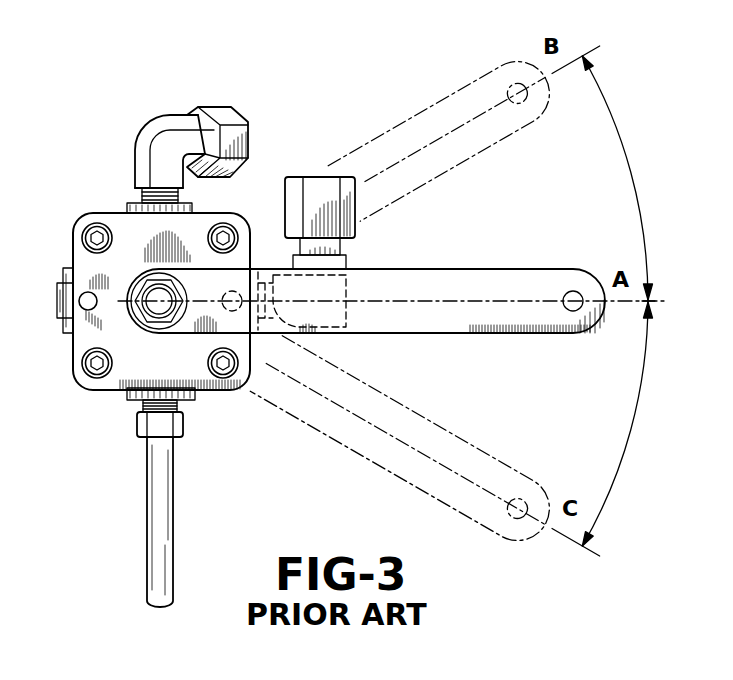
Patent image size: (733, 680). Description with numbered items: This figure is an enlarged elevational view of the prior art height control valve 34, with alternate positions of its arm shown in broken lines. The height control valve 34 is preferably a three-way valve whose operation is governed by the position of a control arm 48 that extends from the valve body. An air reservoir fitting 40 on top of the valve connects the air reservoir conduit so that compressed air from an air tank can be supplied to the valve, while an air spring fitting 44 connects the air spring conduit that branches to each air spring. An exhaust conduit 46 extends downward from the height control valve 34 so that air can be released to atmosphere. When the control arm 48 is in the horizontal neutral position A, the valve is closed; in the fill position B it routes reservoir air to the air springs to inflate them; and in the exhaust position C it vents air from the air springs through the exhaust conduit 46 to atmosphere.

The height control valve 34 is at (62, 364).
The air reservoir fitting 40 is at (150, 128).
The air spring fitting 44 is at (320, 192).
The exhaust conduit 46 is at (150, 515).
The control arm 48 is at (468, 265).